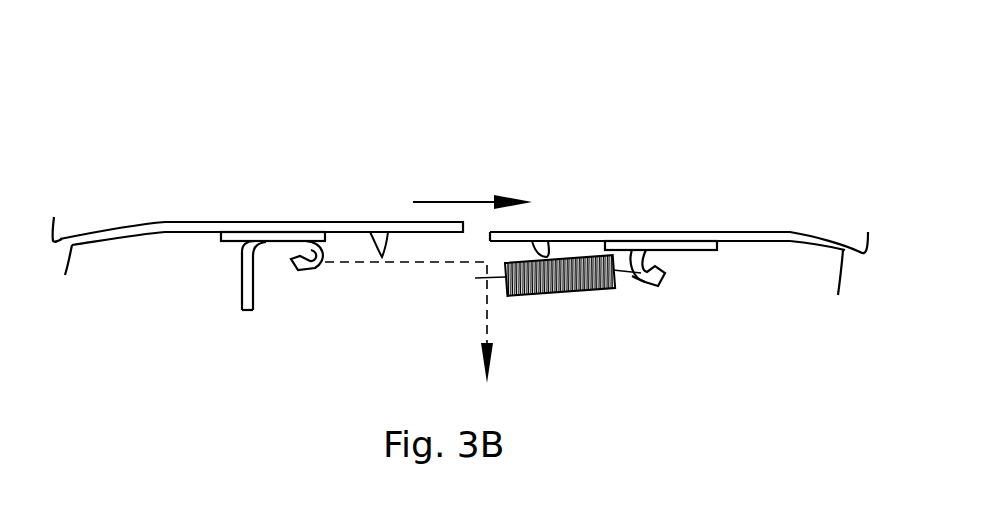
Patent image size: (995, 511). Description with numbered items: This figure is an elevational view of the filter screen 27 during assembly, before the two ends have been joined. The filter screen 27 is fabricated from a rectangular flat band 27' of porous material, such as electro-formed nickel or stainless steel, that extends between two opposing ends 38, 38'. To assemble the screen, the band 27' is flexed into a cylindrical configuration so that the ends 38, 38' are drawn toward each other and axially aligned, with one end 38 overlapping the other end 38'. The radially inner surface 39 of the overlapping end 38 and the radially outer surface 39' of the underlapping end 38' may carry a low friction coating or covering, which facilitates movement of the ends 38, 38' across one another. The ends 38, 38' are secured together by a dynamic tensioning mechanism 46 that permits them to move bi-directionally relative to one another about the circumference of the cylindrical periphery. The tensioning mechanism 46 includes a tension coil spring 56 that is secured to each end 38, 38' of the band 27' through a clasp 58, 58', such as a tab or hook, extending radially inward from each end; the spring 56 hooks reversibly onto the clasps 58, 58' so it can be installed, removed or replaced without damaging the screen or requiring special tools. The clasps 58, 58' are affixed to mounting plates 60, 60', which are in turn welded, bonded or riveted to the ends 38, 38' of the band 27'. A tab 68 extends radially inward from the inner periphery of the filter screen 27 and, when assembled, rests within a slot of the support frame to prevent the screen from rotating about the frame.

The filter screen 27 is at (258, 142).
The band 27' is at (679, 235).
The end 38 is at (411, 196).
The end 38' is at (567, 214).
The radially inner surface 39 is at (334, 214).
The radially outer surface 39' is at (612, 201).
The mounting plate 60 is at (218, 276).
The mounting plate 60' is at (727, 297).
The tab 68 is at (242, 305).
The clasp 58 is at (335, 298).
The clasp 58' is at (689, 302).
The dynamic tensioning mechanism 46 is at (632, 276).
The spring 56 is at (558, 294).